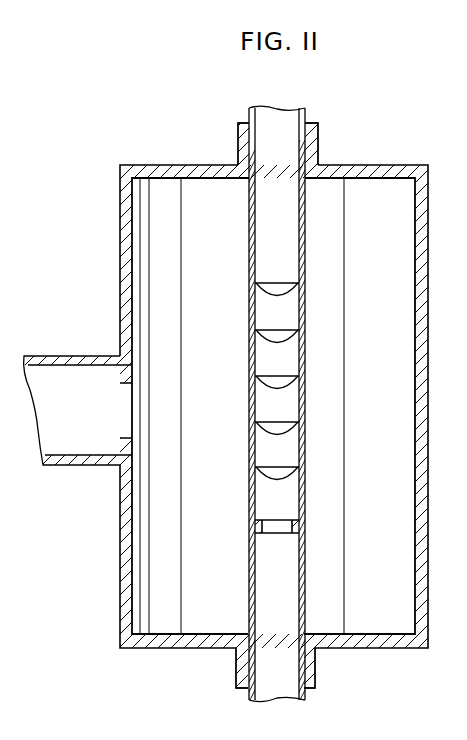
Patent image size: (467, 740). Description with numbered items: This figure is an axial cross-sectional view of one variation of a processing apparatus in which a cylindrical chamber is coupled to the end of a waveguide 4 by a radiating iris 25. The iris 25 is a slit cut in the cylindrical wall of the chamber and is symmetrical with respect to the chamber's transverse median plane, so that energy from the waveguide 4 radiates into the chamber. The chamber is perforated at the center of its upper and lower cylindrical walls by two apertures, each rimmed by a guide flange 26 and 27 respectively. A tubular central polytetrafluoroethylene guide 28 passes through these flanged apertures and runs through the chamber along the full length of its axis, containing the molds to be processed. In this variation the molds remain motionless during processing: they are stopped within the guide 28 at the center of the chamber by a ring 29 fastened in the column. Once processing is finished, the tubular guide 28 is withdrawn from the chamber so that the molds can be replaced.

The waveguide 4 is at (73, 465).
The radiating iris 25 is at (125, 405).
The guide flange 26 is at (318, 135).
The guide flange 27 is at (313, 660).
The tubular central polytetrafluoroethylene guide 28 is at (300, 590).
The ring 29 is at (297, 536).